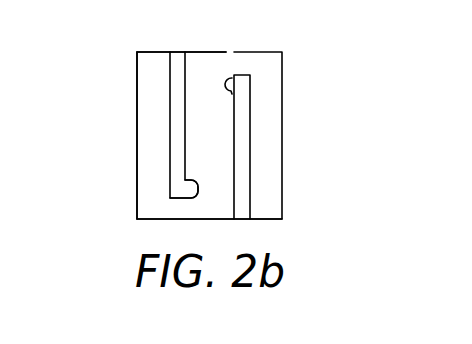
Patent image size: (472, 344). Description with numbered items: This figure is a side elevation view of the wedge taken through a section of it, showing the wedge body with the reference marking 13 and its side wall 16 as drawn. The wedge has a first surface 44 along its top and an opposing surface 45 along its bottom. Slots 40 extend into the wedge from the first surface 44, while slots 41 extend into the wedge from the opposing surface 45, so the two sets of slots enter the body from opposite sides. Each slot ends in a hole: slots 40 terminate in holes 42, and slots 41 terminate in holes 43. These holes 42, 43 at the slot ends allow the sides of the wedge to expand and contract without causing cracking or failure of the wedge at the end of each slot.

The housing 13 is at (283, 98).
The wall 16 is at (137, 162).
The slots 40 is at (170, 108).
The slots 41 is at (234, 142).
The holes 42 is at (185, 190).
The holes 43 is at (233, 78).
The first surface 44 is at (157, 52).
The opposing surface 45 is at (266, 219).